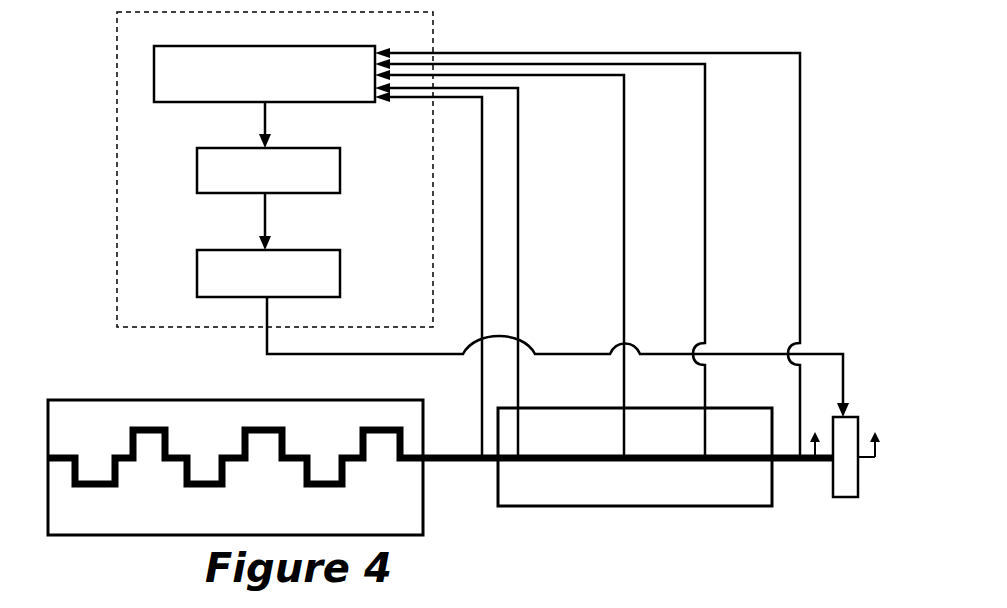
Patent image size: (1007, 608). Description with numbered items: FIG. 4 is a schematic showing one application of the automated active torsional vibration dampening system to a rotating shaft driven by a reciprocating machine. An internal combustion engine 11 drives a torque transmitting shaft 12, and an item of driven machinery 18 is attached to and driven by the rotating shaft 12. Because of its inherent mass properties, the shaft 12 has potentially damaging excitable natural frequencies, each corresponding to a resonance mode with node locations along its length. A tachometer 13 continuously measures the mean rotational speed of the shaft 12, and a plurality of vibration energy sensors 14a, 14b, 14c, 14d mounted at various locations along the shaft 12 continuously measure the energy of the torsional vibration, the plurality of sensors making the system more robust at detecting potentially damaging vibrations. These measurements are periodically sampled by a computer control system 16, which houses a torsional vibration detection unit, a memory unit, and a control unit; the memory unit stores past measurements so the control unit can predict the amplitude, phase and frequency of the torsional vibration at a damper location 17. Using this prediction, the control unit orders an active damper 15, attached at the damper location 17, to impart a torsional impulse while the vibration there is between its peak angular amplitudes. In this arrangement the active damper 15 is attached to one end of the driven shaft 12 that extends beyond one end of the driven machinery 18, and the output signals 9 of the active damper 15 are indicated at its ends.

The output signal 9 is at (845, 434).
The internal combustion engine 11 is at (383, 535).
The shaft 12 is at (450, 462).
The tachometer 13 is at (630, 456).
The vibration energy sensor 14a is at (478, 453).
The vibration energy sensor 14b is at (522, 456).
The vibration energy sensor 14c is at (733, 456).
The vibration energy sensor 14d is at (785, 456).
The active damper 15 is at (855, 500).
The computer control system 16 is at (116, 260).
The damper location 17 is at (832, 462).
The driven machinery 18 is at (690, 508).